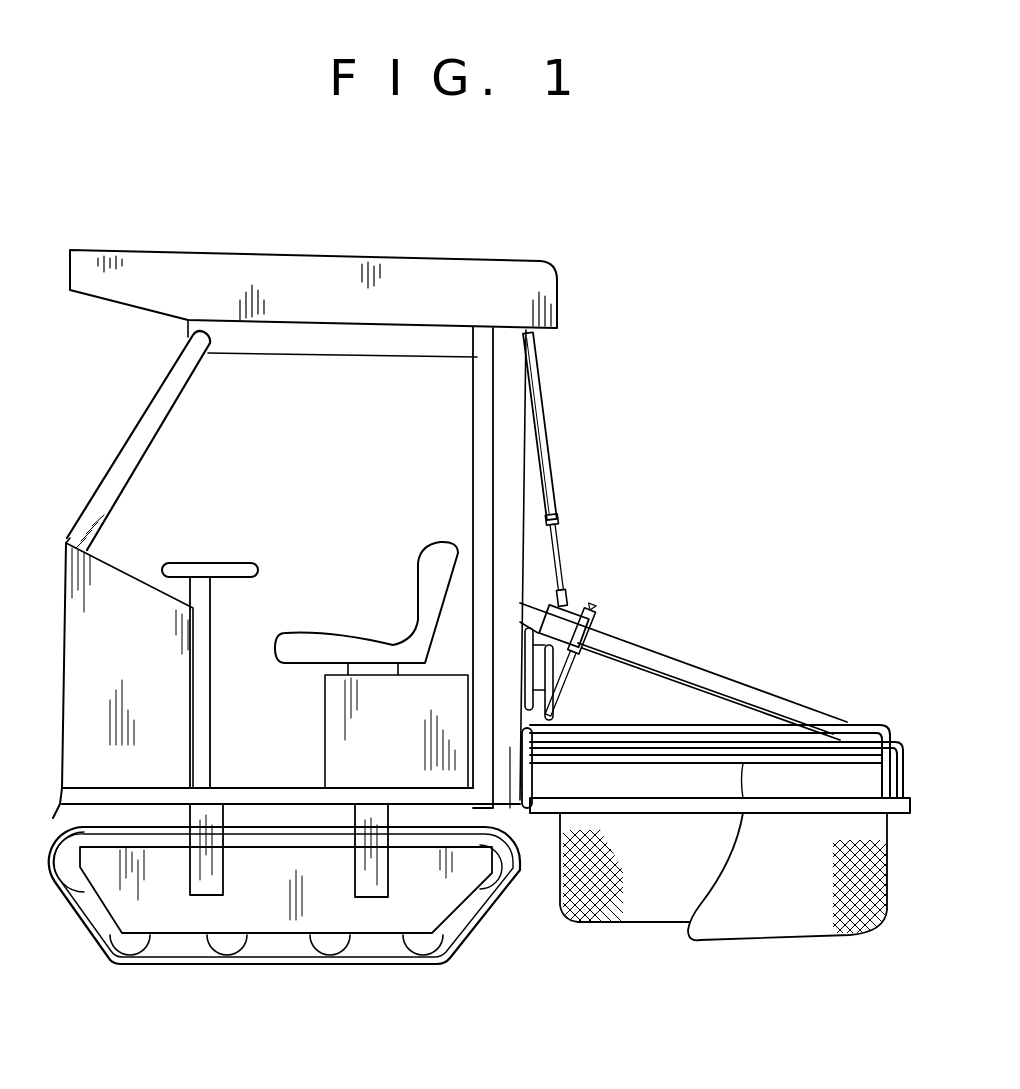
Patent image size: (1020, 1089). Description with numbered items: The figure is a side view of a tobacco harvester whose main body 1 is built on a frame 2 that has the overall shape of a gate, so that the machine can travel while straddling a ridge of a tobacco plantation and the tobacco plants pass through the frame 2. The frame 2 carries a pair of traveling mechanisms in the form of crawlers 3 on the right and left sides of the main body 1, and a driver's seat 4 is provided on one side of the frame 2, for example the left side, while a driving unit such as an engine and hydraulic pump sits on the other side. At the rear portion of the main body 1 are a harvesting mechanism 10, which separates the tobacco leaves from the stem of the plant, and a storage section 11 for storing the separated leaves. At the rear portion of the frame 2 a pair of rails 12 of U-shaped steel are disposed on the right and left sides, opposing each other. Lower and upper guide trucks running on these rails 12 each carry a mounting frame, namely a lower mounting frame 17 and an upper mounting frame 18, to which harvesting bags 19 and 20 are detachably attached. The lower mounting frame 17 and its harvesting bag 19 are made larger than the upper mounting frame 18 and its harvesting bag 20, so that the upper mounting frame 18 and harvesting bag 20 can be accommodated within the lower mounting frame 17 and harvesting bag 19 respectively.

The main body 1 is at (604, 369).
The frame 2 is at (60, 800).
The crawlers 3 is at (305, 963).
The driver's seat 4 is at (282, 625).
The harvesting mechanism 10 is at (703, 621).
The storage section 11 is at (719, 966).
The rails 12 is at (513, 453).
The lower mounting frame 17 is at (893, 738).
The upper mounting frame 18 is at (807, 730).
The harvesting bag 19 is at (825, 925).
The harvesting bag 20 is at (627, 913).